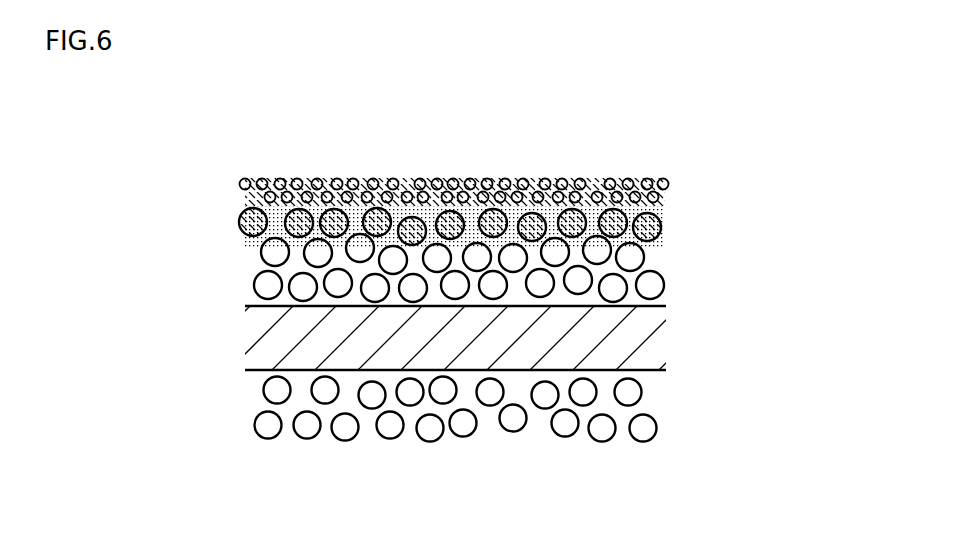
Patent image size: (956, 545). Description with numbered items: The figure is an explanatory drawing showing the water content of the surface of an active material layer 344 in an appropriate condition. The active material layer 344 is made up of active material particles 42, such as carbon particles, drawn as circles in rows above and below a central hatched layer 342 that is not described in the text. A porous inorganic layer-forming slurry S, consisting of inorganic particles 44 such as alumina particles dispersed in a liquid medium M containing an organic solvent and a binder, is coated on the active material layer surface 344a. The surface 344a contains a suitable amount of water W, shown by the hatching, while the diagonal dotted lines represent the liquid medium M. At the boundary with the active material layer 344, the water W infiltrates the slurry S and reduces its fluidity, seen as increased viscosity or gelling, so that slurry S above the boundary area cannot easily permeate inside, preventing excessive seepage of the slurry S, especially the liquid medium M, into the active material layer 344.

The active material layer 344 is at (228, 207).
The active material layer surface 344a is at (663, 207).
The inorganic particles 44 is at (484, 179).
The active material particles 42 is at (658, 283).
The base layer 342 is at (658, 336).
The porous inorganic layer-forming slurry S is at (237, 189).
The liquid medium M is at (659, 180).
The water W is at (663, 237).